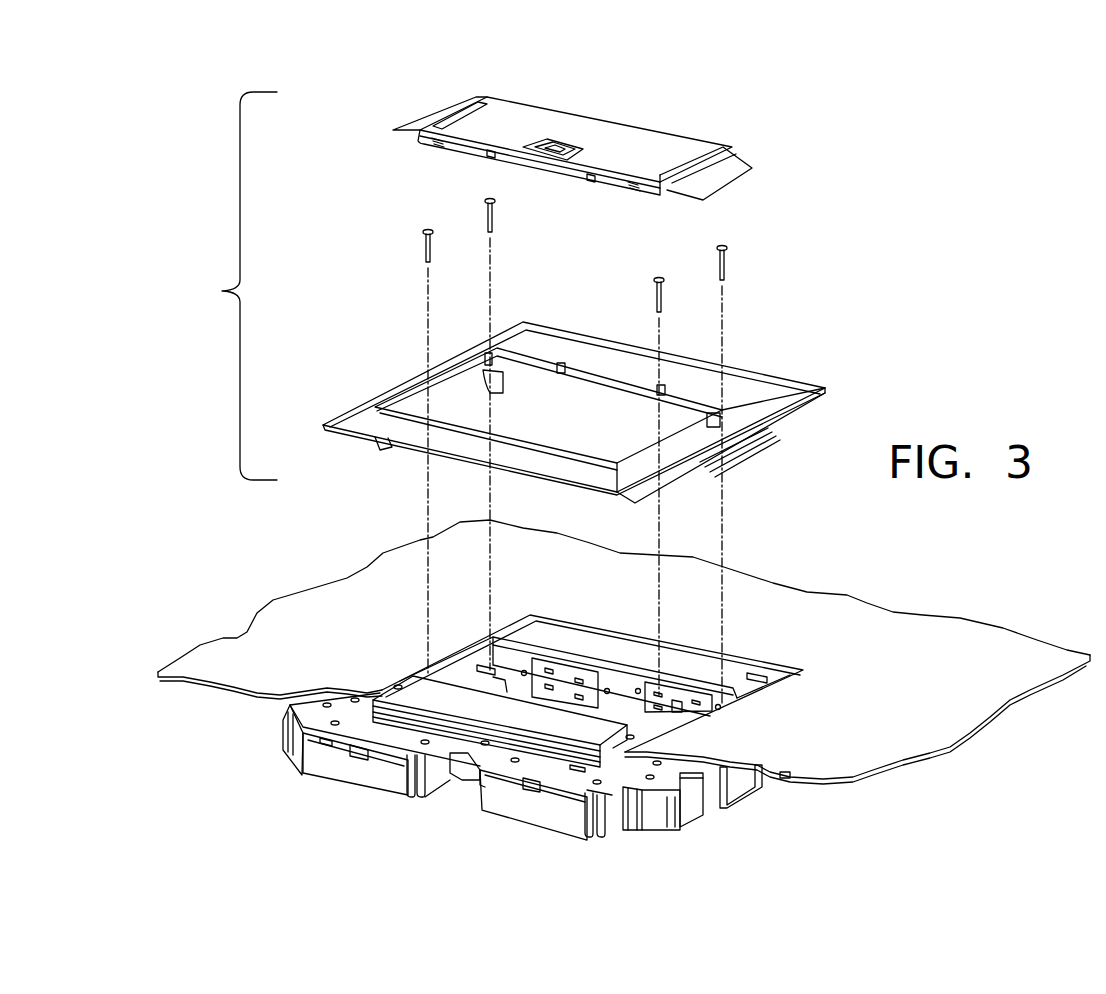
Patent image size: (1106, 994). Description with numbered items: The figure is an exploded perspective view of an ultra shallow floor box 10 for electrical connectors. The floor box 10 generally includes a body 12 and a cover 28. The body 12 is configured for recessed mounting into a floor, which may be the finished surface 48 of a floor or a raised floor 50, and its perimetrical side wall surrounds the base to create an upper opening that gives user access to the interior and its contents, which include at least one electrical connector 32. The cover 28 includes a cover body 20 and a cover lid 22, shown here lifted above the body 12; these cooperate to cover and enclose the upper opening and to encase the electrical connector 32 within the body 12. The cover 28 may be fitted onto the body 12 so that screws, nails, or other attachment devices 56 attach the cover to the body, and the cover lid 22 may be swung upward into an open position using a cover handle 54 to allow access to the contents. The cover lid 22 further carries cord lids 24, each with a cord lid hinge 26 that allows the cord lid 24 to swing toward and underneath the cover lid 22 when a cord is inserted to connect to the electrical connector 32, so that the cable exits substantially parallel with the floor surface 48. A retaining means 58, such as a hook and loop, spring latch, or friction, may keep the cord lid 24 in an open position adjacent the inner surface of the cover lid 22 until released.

The floor box 10 is at (762, 253).
The body 12 is at (463, 780).
The cover body 20 is at (738, 375).
The cover lid 22 is at (637, 147).
The cord lid 24 is at (727, 173).
The cord lid hinge 26 is at (442, 110).
The cover 28 is at (231, 286).
The electrical connector 32 is at (549, 672).
The finished surface 48 is at (953, 648).
The raised floor 50 is at (353, 787).
The cover handle 54 is at (557, 147).
The attachment devices 56 is at (420, 243).
The retaining means 58 is at (682, 698).